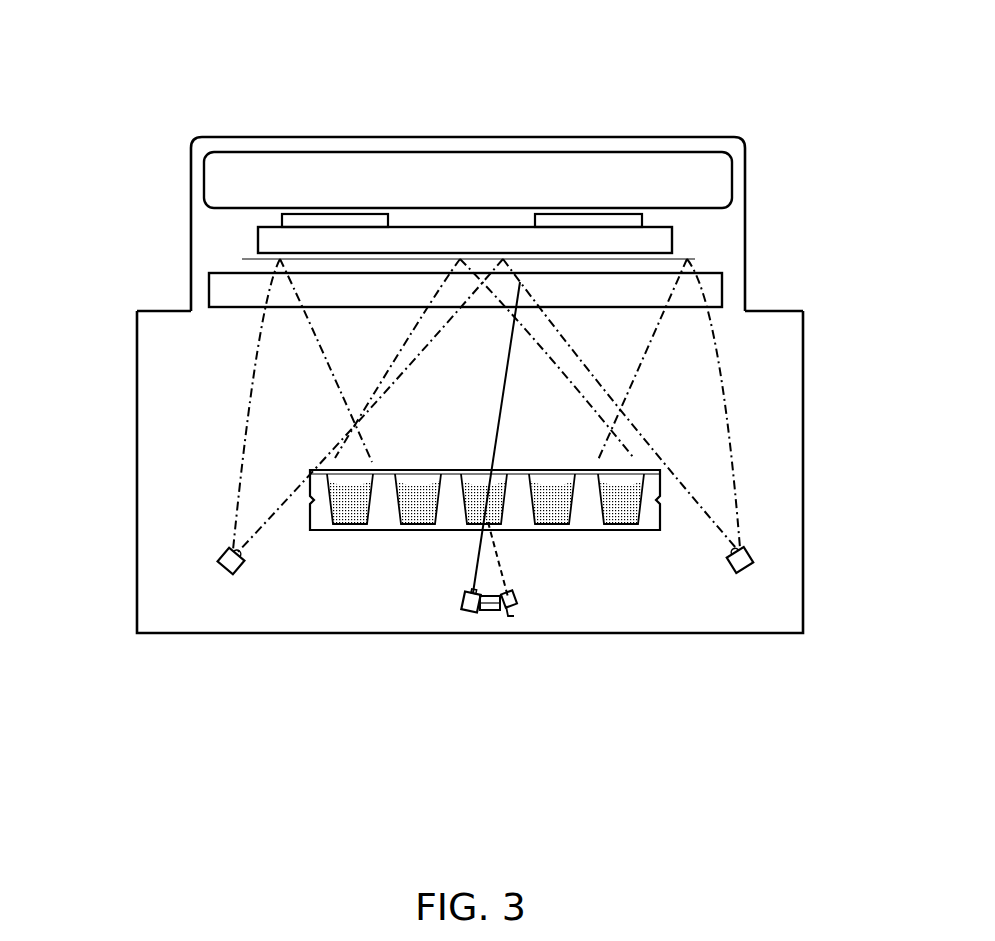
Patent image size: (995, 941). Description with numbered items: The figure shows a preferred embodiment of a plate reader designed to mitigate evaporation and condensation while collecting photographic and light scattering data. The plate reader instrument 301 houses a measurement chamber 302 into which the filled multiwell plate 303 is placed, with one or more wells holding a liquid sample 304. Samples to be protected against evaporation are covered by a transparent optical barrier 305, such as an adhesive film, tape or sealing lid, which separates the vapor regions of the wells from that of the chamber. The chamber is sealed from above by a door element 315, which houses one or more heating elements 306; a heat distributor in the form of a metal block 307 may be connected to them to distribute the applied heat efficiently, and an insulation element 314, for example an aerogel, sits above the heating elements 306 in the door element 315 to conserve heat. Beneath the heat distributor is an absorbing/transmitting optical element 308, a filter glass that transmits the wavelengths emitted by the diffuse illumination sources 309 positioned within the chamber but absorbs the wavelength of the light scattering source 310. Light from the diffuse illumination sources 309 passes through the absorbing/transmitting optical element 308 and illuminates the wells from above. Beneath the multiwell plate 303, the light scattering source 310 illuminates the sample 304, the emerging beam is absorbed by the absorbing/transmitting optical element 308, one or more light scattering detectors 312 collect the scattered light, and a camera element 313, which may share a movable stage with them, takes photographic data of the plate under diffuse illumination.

The plate reader instrument 301 is at (667, 637).
The measurement chamber 302 is at (175, 332).
The multiwell plate 303 is at (318, 517).
The liquid sample 304 is at (549, 507).
The transparent optical barrier 305 is at (325, 470).
The heating elements 306 is at (293, 222).
The metal block 307 is at (268, 242).
The absorbing/transmitting optical element 308 is at (695, 290).
The diffuse illumination sources 309 is at (221, 572).
The light scattering source 310 is at (467, 610).
The light scattering detectors 312 is at (511, 615).
The camera element 313 is at (490, 612).
The insulation element 314 is at (428, 172).
The door element 315 is at (545, 137).